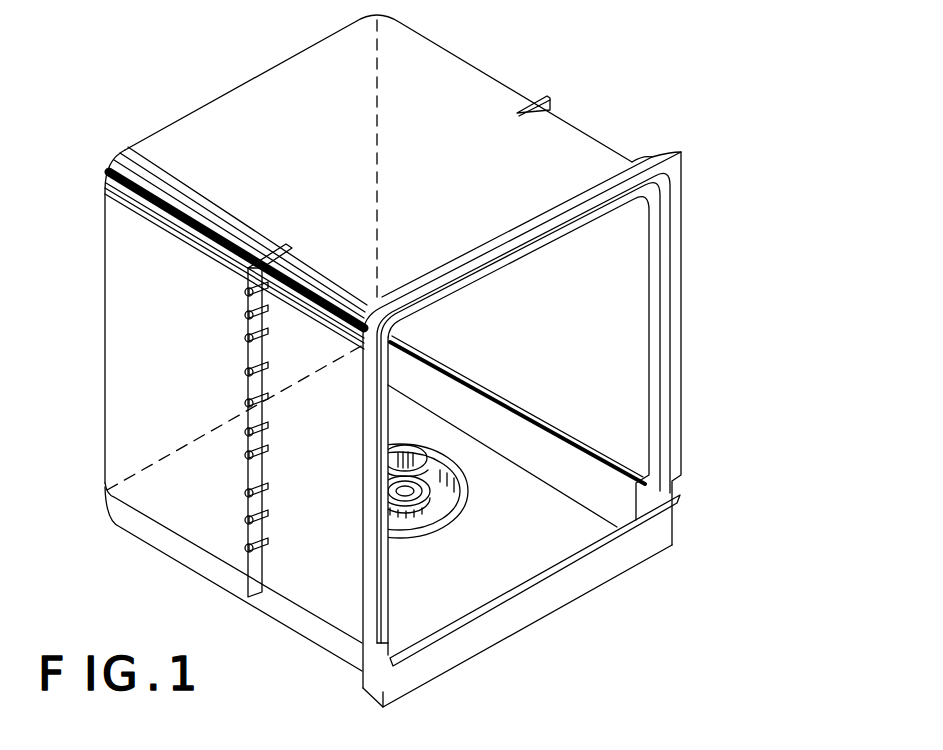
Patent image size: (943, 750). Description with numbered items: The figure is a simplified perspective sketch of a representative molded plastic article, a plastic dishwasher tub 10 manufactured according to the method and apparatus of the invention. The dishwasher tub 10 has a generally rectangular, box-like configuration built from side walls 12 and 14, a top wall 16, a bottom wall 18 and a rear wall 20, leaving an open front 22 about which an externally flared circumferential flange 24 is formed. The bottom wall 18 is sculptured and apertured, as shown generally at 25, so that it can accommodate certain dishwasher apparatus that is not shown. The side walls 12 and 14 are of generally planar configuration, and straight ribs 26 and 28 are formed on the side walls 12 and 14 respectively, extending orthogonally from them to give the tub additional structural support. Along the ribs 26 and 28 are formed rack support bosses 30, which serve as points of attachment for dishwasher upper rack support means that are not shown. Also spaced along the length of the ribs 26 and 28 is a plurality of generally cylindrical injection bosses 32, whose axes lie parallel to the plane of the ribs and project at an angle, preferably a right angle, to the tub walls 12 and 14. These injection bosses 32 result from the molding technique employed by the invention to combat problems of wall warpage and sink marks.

The dishwasher tub 10 is at (608, 127).
The side wall 12 is at (120, 366).
The side wall 14 is at (618, 218).
The top wall 16 is at (280, 88).
The bottom wall 18 is at (466, 592).
The rear wall 20 is at (120, 237).
The open front 22 is at (613, 322).
The externally flared circumferential flange 24 is at (492, 247).
The sculptured and apertured portion of bottom wall 25 is at (423, 497).
The straight rib 26 is at (250, 262).
The straight rib 28 is at (547, 96).
The rack support bosses 30 is at (265, 372).
The injection bosses 32 is at (250, 293).